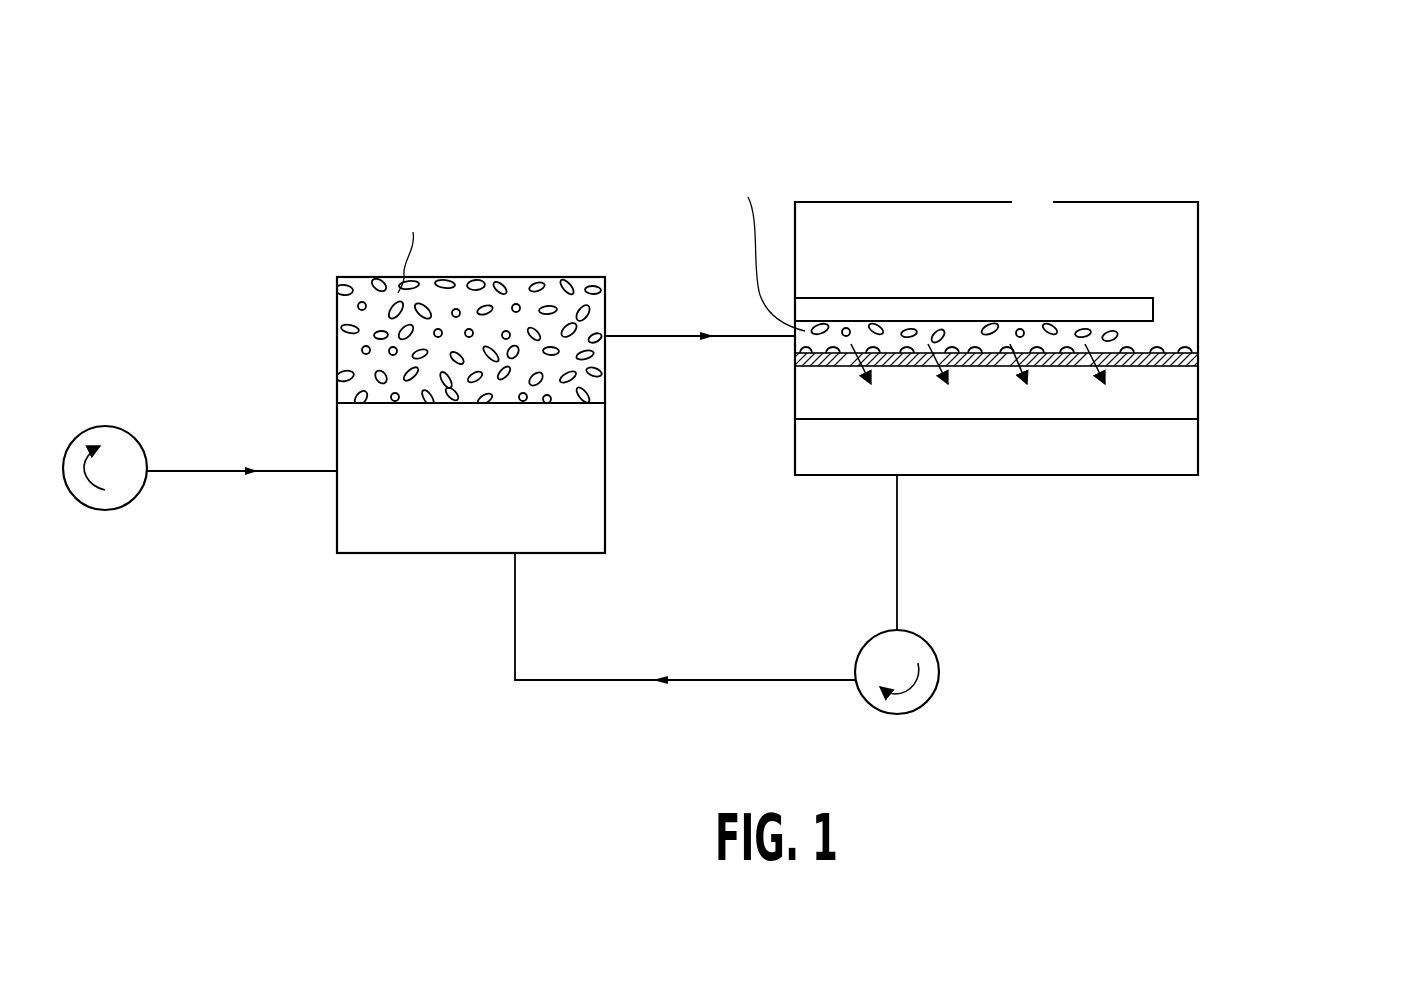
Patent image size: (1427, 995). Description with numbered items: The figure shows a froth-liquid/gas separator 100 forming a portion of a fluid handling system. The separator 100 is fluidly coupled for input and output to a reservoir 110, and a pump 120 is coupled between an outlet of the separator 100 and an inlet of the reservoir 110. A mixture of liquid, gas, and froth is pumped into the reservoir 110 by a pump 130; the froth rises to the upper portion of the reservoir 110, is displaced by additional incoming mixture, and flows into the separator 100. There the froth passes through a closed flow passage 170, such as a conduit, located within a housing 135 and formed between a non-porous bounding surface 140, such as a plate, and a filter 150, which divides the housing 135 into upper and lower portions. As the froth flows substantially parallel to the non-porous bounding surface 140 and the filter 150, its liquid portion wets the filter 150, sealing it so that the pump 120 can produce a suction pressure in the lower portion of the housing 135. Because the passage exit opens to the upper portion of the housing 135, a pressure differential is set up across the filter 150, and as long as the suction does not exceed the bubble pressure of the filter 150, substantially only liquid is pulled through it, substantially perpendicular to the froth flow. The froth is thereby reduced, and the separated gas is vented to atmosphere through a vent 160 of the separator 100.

The froth-liquid/gas separator 100 is at (1320, 107).
The reservoir 110 is at (337, 318).
The pump 120 is at (939, 672).
The pump 130 is at (105, 510).
The housing 135 is at (1199, 250).
The non-porous bounding surface 140 is at (871, 302).
The filter 150 is at (1196, 362).
The vent 160 is at (1036, 205).
The closed flow passage 170 is at (1130, 336).